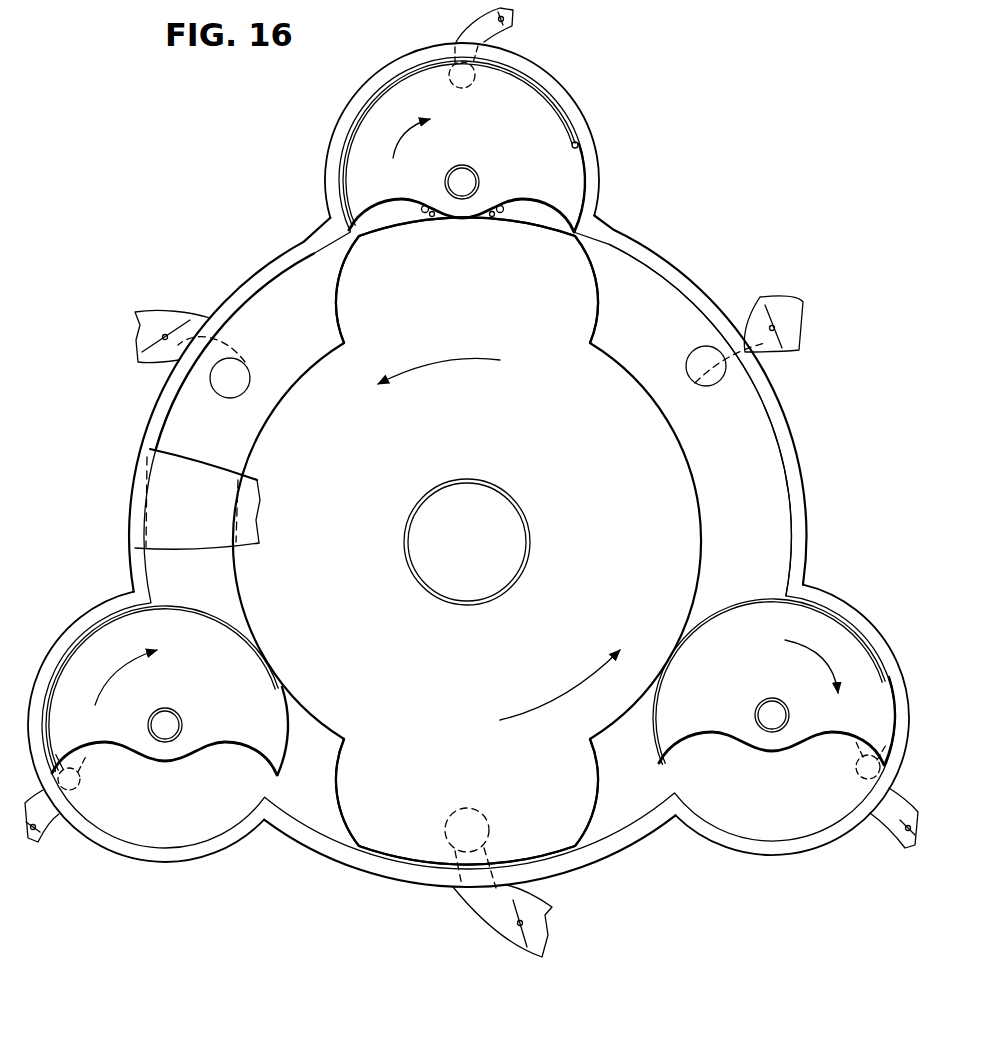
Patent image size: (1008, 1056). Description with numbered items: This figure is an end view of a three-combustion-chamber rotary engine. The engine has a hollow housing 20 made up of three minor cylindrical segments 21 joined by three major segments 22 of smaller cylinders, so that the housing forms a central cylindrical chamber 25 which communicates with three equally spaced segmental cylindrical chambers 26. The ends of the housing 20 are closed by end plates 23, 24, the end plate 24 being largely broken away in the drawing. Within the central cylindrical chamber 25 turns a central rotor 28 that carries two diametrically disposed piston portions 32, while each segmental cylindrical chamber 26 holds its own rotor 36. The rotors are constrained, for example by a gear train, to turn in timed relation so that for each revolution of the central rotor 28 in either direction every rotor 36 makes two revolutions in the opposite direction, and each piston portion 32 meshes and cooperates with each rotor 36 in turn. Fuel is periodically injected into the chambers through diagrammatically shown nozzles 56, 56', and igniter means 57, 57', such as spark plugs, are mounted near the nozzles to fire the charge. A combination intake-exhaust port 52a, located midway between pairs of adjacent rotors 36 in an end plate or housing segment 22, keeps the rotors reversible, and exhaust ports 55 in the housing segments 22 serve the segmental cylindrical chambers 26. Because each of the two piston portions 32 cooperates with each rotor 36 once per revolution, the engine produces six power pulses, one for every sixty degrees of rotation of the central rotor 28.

The hollow housing 20 is at (812, 524).
The minor cylindrical segments 21 is at (790, 457).
The major segments 22 is at (600, 172).
The end plate 23 is at (275, 292).
The end plate 24 is at (165, 498).
The central cylindrical chamber 25 is at (770, 550).
The segmental cylindrical chambers 26 is at (579, 143).
The central rotor 28 is at (603, 372).
The piston portions 32 is at (580, 300).
The rotor 36 is at (540, 98).
The combination intake-exhaust port 52a is at (227, 390).
The exhaust ports 55 is at (470, 85).
The nozzle 56 is at (413, 189).
The nozzle 56' is at (520, 189).
The igniter means 57 is at (411, 237).
The igniter means 57' is at (514, 237).